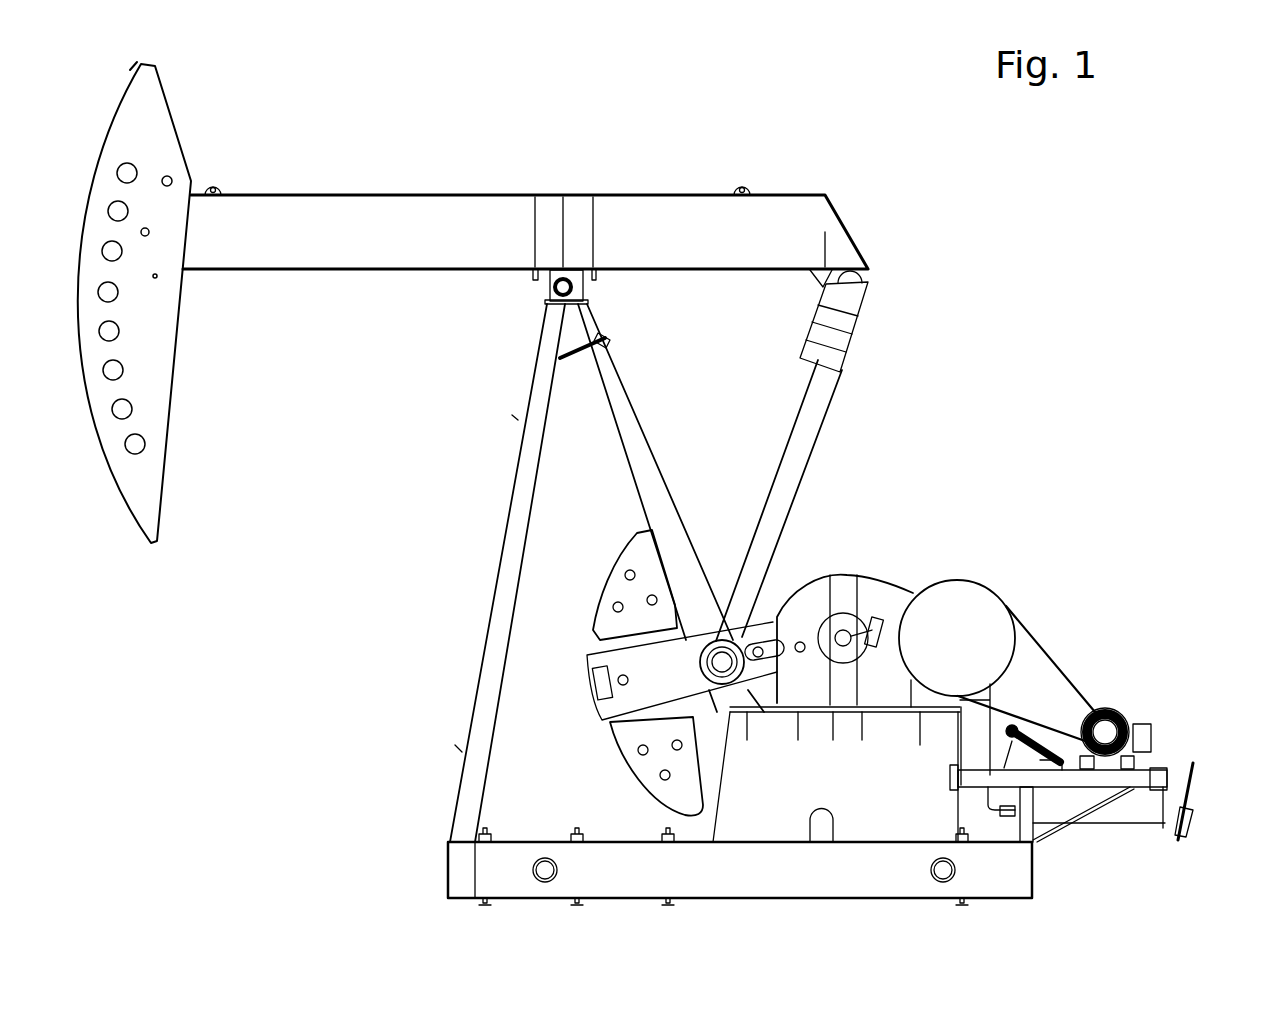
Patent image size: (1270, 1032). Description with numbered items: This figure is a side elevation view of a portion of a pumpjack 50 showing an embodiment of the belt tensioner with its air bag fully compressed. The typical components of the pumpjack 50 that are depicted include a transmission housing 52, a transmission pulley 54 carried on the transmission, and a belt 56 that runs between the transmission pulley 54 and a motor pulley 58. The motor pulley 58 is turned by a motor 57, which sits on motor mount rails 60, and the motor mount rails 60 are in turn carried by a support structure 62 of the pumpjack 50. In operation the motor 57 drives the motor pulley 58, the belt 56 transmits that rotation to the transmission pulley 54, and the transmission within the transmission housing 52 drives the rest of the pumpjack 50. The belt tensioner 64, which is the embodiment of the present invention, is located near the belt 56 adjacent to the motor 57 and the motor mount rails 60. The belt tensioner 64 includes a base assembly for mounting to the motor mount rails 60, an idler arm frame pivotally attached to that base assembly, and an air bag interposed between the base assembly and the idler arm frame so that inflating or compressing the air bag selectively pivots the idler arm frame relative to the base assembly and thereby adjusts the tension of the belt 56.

The pumpjack 50 is at (421, 129).
The transmission housing 52 is at (868, 595).
The transmission pulley 54 is at (967, 596).
The belt 56 is at (1045, 647).
The motor 57 is at (1107, 708).
The motor pulley 58 is at (1121, 718).
The motor mount rails 60 is at (1151, 767).
The support structure 62 is at (1118, 778).
The belt tensioner 64 is at (1030, 757).